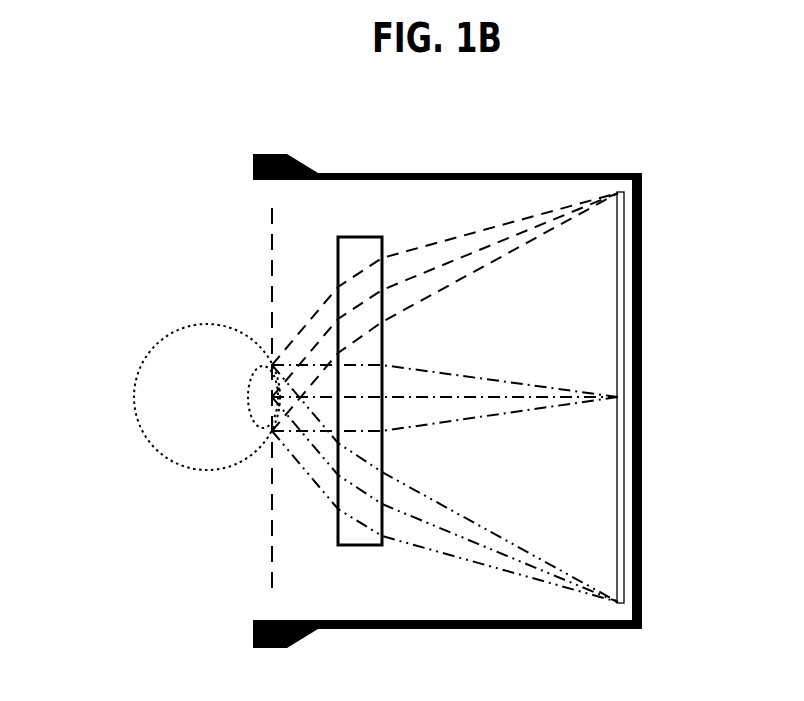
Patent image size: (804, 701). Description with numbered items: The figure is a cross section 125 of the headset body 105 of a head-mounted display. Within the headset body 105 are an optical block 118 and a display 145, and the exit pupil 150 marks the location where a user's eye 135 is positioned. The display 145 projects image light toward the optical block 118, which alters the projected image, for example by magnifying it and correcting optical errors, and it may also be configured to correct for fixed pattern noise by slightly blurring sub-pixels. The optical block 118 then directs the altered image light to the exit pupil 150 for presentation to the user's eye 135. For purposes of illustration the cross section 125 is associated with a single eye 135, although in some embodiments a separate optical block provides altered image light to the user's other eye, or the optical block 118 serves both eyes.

The cross section 125 is at (86, 120).
The headset body 105 is at (589, 173).
The optical block 118 is at (338, 258).
The eye 135 is at (134, 390).
The display 145 is at (620, 255).
The exit pupil 150 is at (271, 500).